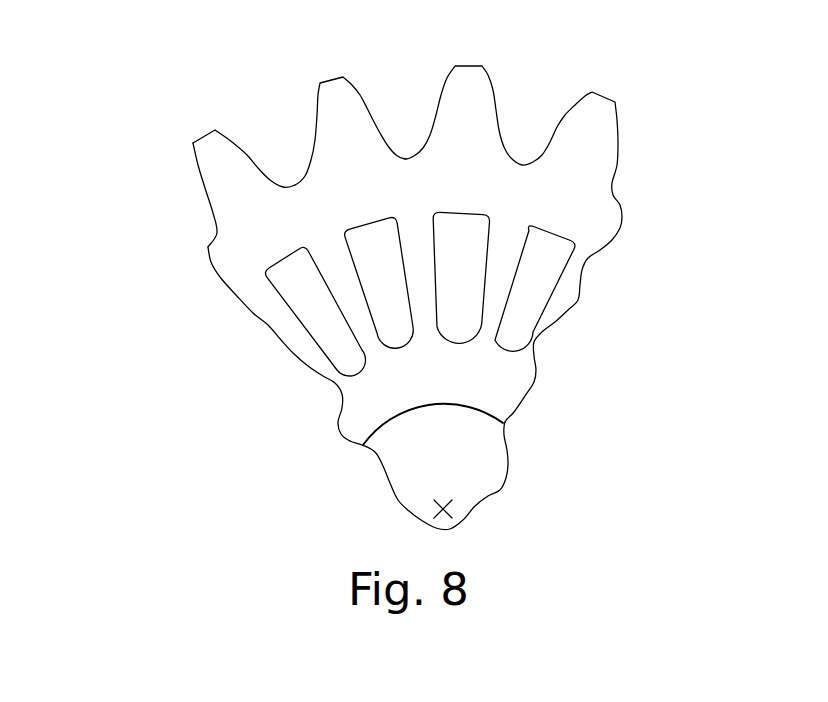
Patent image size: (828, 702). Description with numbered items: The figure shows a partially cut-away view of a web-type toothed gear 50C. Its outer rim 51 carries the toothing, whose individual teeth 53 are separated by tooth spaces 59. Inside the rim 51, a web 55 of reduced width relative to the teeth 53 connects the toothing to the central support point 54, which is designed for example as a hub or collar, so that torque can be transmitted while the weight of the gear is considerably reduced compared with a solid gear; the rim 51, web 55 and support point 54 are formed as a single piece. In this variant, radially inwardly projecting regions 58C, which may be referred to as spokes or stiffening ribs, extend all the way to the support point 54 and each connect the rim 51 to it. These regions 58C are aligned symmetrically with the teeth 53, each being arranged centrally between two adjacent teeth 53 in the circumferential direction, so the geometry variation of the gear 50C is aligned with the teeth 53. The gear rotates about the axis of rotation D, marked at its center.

The toothed gear 50C is at (153, 112).
The rim 51 is at (230, 248).
The teeth 53 is at (335, 95).
The tooth space 59 is at (288, 143).
The web 55 is at (297, 297).
The radially inwardly projecting regions 58C is at (362, 320).
The support point 54 is at (353, 417).
The axis of rotation D is at (433, 503).